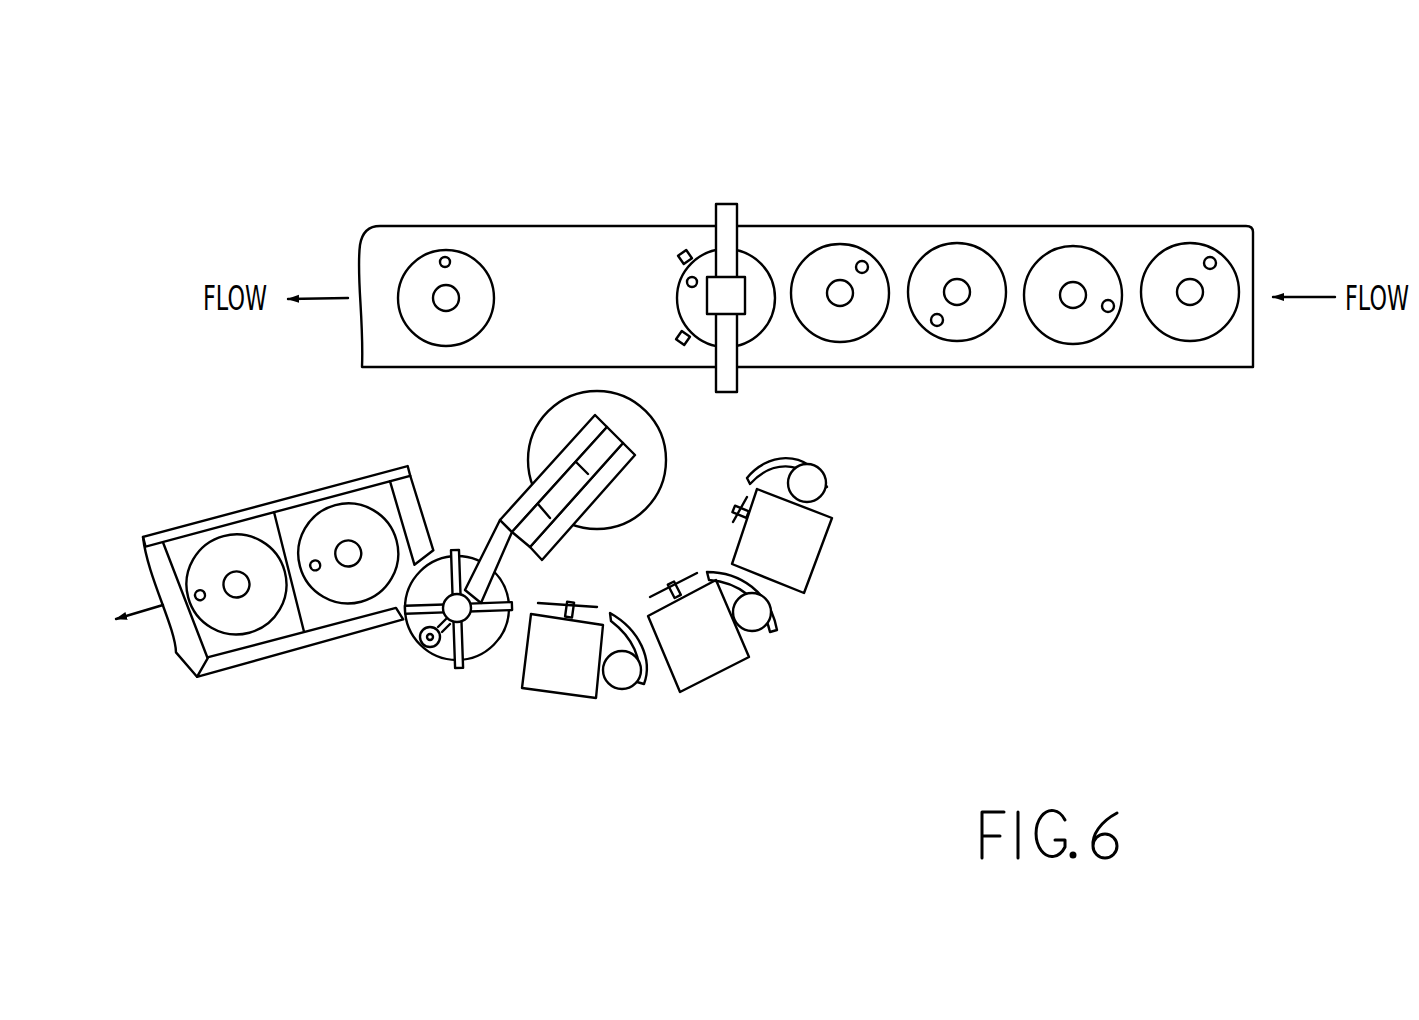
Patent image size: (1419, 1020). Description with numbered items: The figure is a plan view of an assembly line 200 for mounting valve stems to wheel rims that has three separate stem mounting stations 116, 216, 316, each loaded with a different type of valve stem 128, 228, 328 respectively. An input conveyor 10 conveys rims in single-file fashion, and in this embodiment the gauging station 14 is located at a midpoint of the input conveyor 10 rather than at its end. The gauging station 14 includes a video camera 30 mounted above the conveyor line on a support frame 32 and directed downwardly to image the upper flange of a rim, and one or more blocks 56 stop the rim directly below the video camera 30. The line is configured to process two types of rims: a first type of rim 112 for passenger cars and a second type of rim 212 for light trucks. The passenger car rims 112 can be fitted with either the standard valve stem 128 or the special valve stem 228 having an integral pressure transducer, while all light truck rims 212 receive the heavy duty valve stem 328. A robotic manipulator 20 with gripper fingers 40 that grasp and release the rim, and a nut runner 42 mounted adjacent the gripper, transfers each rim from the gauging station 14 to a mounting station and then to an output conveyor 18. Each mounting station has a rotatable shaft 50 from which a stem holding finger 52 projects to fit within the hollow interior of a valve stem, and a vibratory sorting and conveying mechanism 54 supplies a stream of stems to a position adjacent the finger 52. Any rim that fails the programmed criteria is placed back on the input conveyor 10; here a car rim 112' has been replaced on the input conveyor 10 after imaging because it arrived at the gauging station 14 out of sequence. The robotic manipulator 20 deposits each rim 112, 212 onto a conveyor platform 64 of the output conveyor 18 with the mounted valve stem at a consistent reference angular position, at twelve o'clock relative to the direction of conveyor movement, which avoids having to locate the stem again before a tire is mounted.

The input conveyor 10 is at (1103, 222).
The first type of rim 112 is at (1057, 298).
The car rim 112' is at (404, 242).
The gauging station 14 is at (768, 384).
The output conveyor 18 is at (245, 666).
The robotic manipulator 20 is at (546, 409).
The video camera 30 is at (741, 276).
The support frame 32 is at (716, 206).
The fingers 40 is at (455, 548).
The nut runner 42 is at (426, 648).
The shaft 50 is at (565, 605).
The stem holding finger 52 is at (738, 507).
The vibratory sorting and conveying mechanism 54 is at (833, 487).
The blocks 56 is at (684, 254).
The conveyor platform 64 is at (368, 493).
The stem mounting station 116 is at (824, 556).
The standard valve stem 128 is at (745, 503).
The assembly line 200 is at (983, 565).
The second type of rim 212 is at (758, 275).
The stem mounting station 216 is at (731, 671).
The special valve stem 228 is at (696, 573).
The stem mounting station 316 is at (588, 706).
The heavy duty valve stem 328 is at (594, 607).